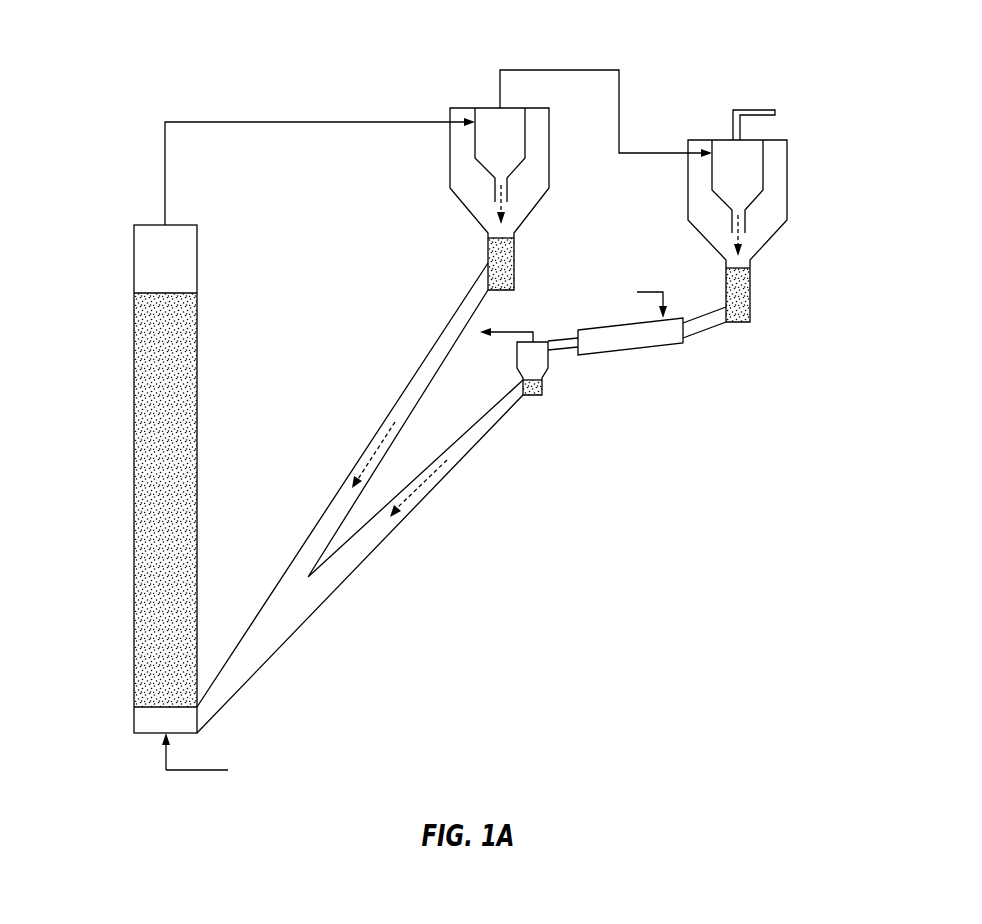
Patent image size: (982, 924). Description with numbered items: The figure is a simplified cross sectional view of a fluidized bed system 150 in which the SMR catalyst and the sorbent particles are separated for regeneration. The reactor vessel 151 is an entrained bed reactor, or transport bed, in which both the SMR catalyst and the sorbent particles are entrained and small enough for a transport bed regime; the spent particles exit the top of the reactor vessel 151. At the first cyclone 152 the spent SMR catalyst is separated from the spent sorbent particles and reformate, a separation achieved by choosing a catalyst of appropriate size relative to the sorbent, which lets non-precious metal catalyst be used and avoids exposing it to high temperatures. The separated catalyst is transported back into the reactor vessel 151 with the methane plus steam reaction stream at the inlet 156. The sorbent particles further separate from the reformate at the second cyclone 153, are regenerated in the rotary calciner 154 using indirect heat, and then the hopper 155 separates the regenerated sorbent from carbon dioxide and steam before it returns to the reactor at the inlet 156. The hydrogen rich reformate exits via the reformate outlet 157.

The fluidized bed system 150 is at (150, 50).
The reactor vessel 151 is at (134, 478).
The first cyclone 152 is at (525, 143).
The second cyclone 153 is at (763, 165).
The rotary calciner 154 is at (630, 343).
The hopper 155 is at (533, 395).
The inlet 156 is at (203, 772).
The reformate outlet 157 is at (752, 108).